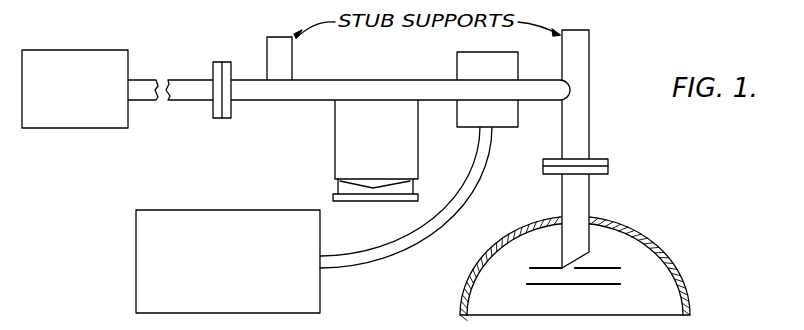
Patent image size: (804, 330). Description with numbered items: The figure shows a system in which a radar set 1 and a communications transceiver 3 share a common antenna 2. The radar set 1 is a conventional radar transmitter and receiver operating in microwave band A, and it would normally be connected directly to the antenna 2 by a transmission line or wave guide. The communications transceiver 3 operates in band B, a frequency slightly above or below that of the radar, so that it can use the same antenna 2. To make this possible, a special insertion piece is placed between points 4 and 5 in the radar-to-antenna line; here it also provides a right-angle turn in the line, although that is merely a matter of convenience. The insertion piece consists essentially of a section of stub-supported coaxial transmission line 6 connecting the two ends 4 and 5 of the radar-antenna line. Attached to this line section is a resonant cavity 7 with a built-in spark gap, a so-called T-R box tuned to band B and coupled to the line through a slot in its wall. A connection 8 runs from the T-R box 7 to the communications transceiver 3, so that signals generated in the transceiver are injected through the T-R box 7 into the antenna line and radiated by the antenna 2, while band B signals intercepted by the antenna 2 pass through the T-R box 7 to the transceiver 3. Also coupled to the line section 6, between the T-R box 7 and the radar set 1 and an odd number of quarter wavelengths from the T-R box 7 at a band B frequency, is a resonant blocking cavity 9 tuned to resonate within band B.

The radar set 1 is at (95, 50).
The antenna 2 is at (657, 246).
The communications transceiver 3 is at (136, 270).
The point in transmission line 4 is at (213, 72).
The point in transmission line 5 is at (592, 175).
The stub-supported coaxial transmission line 6 is at (347, 80).
The resonant cavity (T-R box) 7 is at (508, 53).
The connection 8 is at (407, 252).
The resonant blocking cavity 9 is at (335, 138).